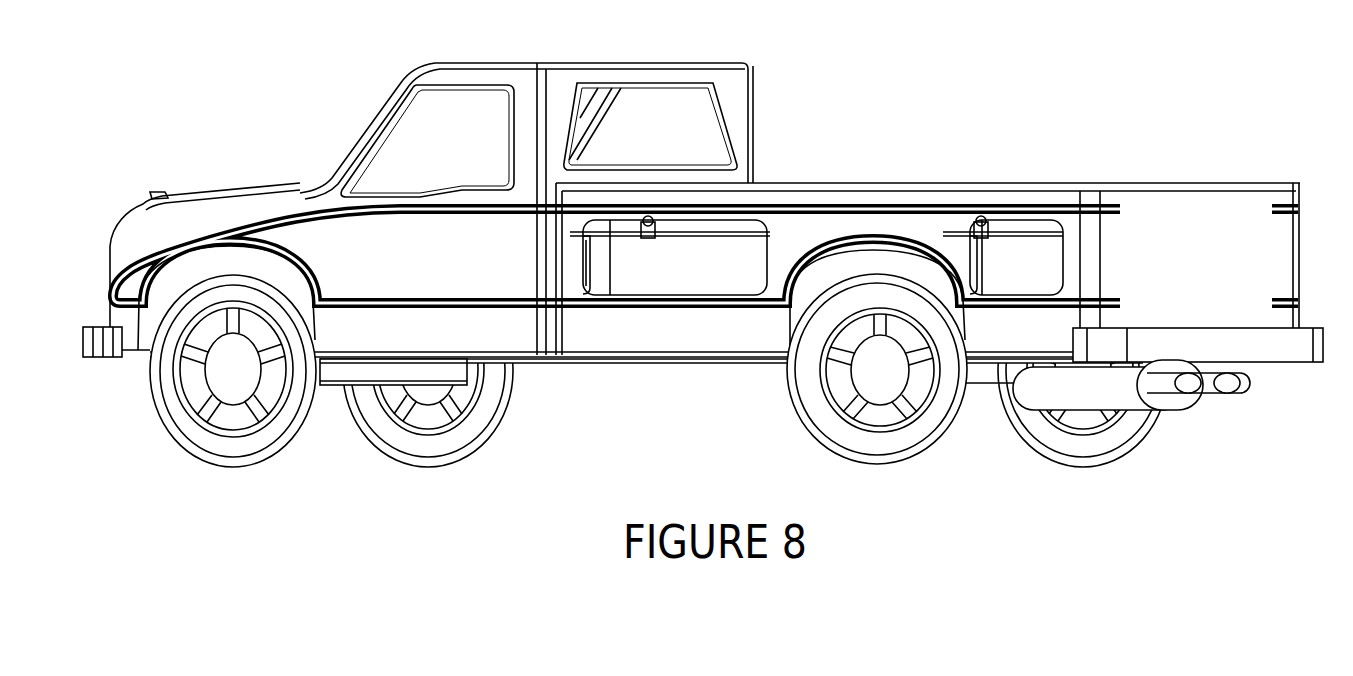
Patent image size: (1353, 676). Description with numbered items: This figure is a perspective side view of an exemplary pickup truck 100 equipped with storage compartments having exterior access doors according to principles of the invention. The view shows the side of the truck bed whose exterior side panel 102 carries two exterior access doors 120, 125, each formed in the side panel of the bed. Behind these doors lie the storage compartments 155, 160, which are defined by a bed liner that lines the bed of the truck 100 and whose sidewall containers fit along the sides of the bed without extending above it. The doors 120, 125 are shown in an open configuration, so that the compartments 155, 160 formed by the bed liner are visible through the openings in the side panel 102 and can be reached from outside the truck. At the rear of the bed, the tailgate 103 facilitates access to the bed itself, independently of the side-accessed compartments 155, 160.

The pickup truck 100 is at (530, 377).
The exterior side panel 102 is at (740, 337).
The tailgate 103 is at (1190, 218).
The exterior access door 120 is at (733, 233).
The exterior access door 125 is at (1018, 233).
The storage compartment 155 is at (647, 277).
The storage compartment 160 is at (1010, 277).